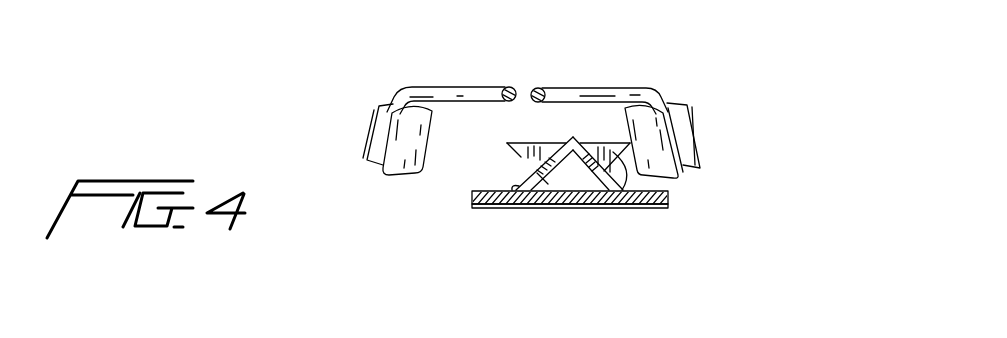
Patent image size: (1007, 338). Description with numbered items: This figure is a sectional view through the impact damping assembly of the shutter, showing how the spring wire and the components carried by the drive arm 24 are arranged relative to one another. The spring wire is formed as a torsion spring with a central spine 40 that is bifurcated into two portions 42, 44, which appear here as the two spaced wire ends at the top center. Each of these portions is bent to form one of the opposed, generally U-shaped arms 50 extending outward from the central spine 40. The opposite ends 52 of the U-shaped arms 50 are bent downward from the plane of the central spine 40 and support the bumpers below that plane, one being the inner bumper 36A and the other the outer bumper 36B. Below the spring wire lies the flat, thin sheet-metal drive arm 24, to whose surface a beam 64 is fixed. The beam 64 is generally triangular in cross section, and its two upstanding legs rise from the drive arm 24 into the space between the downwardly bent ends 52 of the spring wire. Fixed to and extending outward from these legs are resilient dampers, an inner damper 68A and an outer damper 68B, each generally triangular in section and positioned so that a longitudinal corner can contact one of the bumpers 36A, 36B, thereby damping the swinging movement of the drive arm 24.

The drive arm 24 is at (655, 212).
The inner bumper 36A is at (672, 173).
The outer bumper 36B is at (393, 178).
The central spine 40 is at (542, 76).
The first portion of bifurcated spine 42 is at (500, 92).
The second portion of bifurcated spine 44 is at (556, 90).
The U-shaped arm 50 is at (438, 88).
The opposite end of U-shaped arm 52 is at (370, 143).
The beam 64 is at (497, 210).
The inner damper 68A is at (617, 210).
The outer damper 68B is at (520, 163).